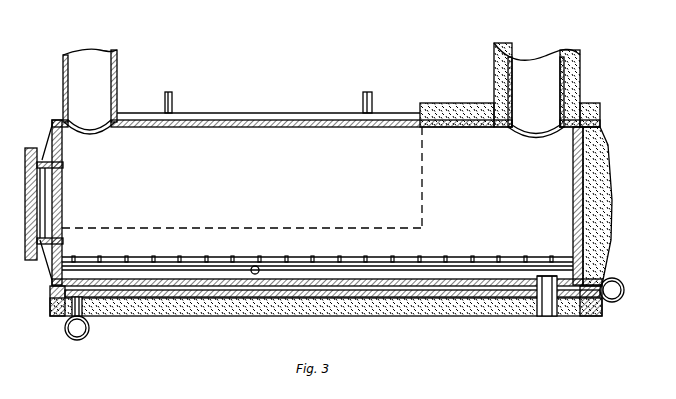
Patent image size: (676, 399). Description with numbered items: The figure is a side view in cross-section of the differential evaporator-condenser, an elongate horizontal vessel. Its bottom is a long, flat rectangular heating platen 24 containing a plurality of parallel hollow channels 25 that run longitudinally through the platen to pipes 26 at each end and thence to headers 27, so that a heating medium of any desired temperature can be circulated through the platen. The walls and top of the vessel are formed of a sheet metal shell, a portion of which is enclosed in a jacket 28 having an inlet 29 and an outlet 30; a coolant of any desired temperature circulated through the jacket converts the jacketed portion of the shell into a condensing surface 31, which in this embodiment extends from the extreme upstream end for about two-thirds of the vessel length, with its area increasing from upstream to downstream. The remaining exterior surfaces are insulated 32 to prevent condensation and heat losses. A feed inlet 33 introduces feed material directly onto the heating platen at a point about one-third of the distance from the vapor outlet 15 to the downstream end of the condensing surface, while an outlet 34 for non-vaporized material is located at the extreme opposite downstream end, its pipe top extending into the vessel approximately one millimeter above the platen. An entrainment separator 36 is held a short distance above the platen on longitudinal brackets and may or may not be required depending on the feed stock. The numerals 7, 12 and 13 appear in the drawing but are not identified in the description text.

The flanged inlet nozzle 7 is at (27, 170).
The nozzle element 12 is at (20, 236).
The nozzle element 13 is at (22, 264).
The vapor outlet 15 is at (63, 74).
The heating platen 24 is at (408, 300).
The hollow channels 25 is at (108, 290).
The pipes 26 is at (54, 305).
The headers 27 is at (68, 334).
The jacket 28 is at (215, 113).
The inlet 29 is at (167, 100).
The outlet 30 is at (366, 100).
The condensing surface 31 is at (258, 124).
The insulation 32 is at (462, 103).
The feed inlet 33 is at (258, 267).
The outlet for non-vaporized material 34 is at (558, 314).
The entrainment separator 36 is at (442, 262).